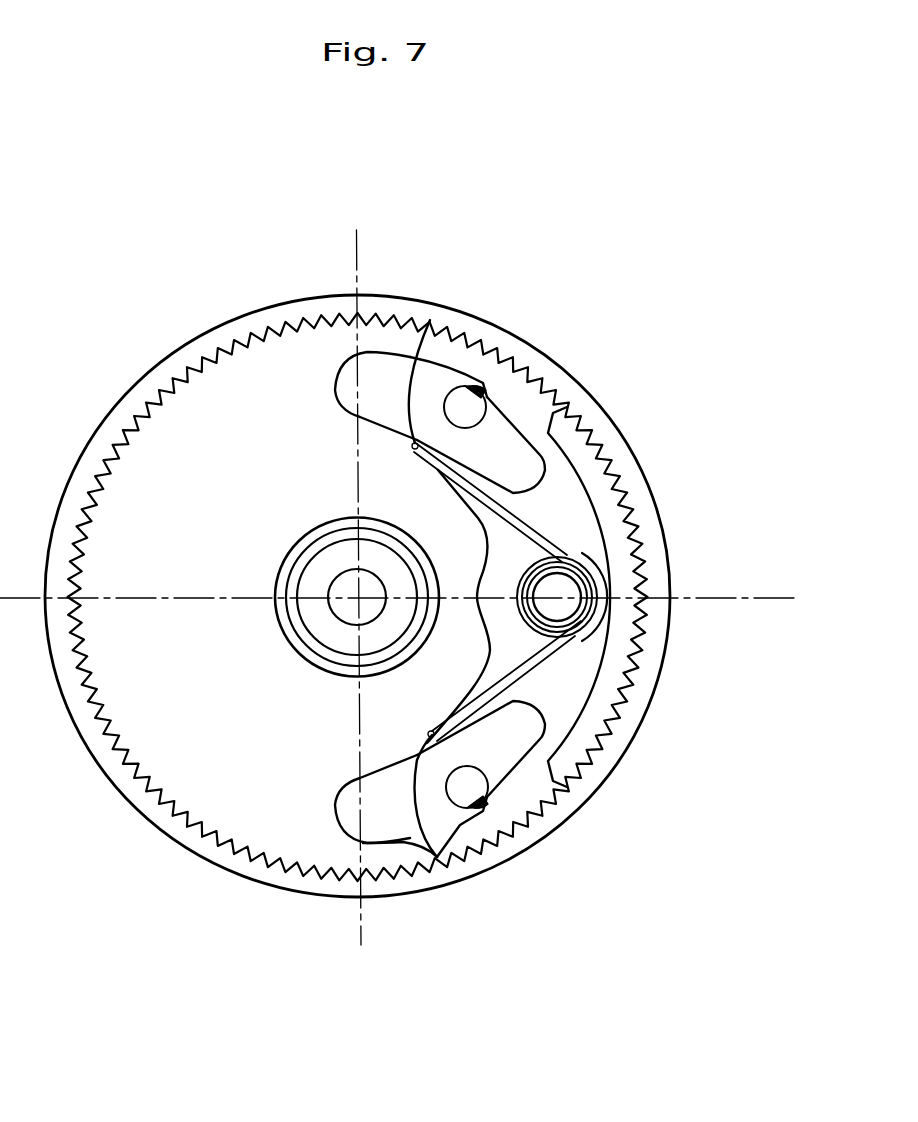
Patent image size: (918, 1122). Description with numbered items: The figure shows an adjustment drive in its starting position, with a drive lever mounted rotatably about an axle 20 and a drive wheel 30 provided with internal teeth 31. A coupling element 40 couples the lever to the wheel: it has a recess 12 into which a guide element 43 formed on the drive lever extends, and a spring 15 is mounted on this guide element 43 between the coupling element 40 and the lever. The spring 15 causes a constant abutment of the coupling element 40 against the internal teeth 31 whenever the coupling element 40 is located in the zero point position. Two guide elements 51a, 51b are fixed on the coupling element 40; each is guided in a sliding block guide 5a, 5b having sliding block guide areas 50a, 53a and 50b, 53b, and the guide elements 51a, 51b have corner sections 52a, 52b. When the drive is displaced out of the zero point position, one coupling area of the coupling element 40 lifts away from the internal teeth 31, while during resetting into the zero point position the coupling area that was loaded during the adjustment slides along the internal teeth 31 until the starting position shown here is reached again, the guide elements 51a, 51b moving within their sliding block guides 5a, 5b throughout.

The axle 20 is at (343, 586).
The drive wheel 30 is at (653, 512).
The internal teeth 31 is at (603, 457).
The coupling element 40 is at (560, 690).
The recess 12 is at (596, 604).
The spring 15 is at (603, 566).
The guide element 43 is at (557, 607).
The sliding block guide 5a is at (345, 379).
The sliding block guide 5b is at (370, 815).
The sliding block guide area 50a is at (370, 352).
The sliding block guide area 50b is at (410, 845).
The guide element 51a is at (410, 395).
The guide element 51b is at (480, 789).
The corner section 52a is at (463, 413).
The corner section 52b is at (478, 805).
The sliding block guide area 53a is at (507, 422).
The sliding block guide area 53b is at (560, 750).